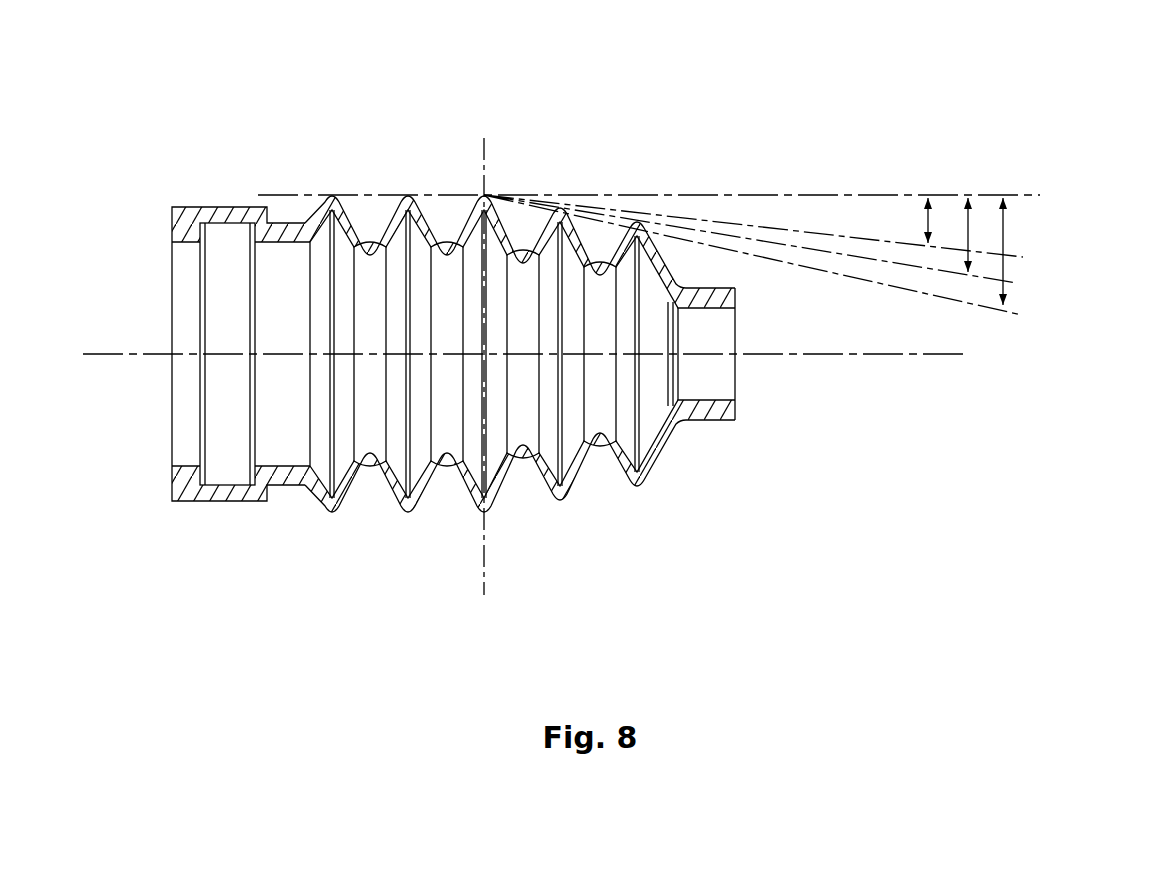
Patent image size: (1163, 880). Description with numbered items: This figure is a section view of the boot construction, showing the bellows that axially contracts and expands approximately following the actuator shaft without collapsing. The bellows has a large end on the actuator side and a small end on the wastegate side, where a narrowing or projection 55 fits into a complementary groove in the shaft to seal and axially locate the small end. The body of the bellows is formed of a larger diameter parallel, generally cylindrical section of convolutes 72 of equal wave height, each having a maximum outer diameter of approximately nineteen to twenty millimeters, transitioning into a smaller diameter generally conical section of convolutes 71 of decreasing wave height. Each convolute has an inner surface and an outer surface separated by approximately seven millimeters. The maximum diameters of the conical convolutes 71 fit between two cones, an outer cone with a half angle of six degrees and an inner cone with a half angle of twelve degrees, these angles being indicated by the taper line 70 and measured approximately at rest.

The projection 55 is at (700, 309).
The taper line 70 is at (767, 245).
The convolutes of the generally conical section 71 is at (641, 215).
The wave or convolute of the larger diameter parallel section 72 is at (480, 192).